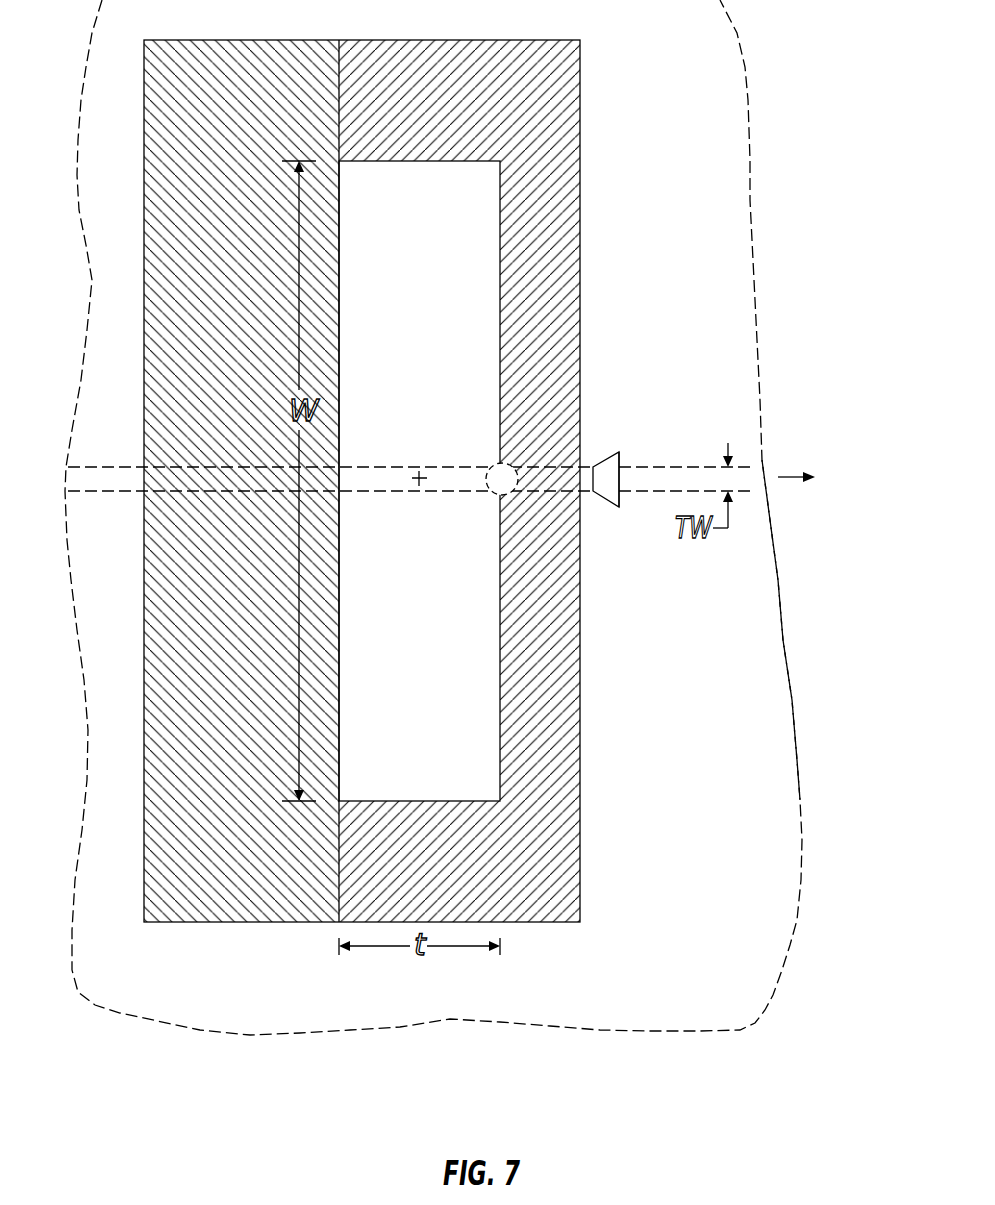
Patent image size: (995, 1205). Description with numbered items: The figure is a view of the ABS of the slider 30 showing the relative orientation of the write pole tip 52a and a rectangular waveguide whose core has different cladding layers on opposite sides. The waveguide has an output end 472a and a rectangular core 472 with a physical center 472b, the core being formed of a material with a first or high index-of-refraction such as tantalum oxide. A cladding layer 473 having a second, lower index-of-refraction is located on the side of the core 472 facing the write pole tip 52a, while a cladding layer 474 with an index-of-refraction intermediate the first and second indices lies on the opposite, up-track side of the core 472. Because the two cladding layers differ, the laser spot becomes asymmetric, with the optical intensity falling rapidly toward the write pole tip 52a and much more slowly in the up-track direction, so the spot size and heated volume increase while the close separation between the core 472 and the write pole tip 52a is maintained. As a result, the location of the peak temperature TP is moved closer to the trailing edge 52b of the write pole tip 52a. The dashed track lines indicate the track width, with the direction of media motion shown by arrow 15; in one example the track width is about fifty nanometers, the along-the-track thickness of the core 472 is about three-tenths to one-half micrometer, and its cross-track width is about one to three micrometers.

The slider 30 is at (802, 834).
The air-bearing surface ABS is at (790, 636).
The cladding layer 474 is at (218, 905).
The cladding layer 473 is at (568, 738).
The output end 472a is at (580, 148).
The rectangular core 472 is at (478, 290).
The physical center 472b is at (419, 471).
The peak temperature TP is at (506, 462).
The write pole tip 52a is at (602, 488).
The trailing edge 52b is at (620, 456).
The direction of motion 15 is at (800, 471).